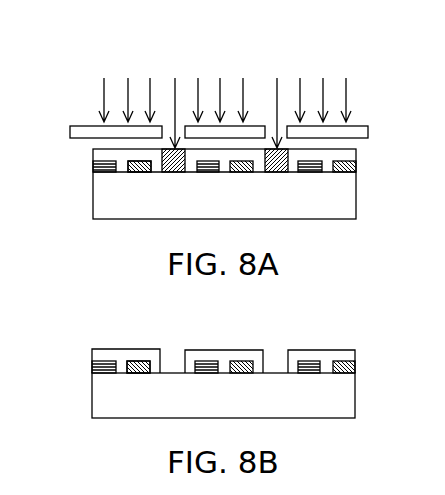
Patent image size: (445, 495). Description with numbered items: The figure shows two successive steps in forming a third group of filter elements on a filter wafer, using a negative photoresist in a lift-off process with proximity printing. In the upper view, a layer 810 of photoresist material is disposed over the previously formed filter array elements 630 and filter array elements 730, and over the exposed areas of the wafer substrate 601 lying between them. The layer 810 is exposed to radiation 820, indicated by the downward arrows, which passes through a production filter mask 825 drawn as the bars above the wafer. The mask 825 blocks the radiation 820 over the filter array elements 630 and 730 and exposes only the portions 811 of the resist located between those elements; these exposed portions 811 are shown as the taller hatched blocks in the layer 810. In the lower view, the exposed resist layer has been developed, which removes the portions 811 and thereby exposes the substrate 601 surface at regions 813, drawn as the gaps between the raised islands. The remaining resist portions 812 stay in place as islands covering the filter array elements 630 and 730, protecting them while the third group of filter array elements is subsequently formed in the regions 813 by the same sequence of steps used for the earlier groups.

In FIG. 8A, the substrate 601 is at (210, 212).
In FIG. 8B, the substrate 601 is at (208, 407).
In FIG. 8A, the filter array elements 630 is at (93, 166).
In FIG. 8B, the filter array elements 630 is at (92, 373).
In FIG. 8A, the filter array elements 730 is at (140, 175).
In FIG. 8B, the filter array elements 730 is at (140, 372).
In FIG. 8A, the layer of photoresist material 810 is at (358, 163).
In FIG. 8A, the portions 811 is at (176, 147).
In FIG. 8A, the resist portions 812 is at (229, 156).
In FIG. 8B, the resist portions 812 is at (127, 349).
In FIG. 8B, the regions 813 is at (173, 360).
In FIG. 8A, the radiation 820 is at (347, 95).
In FIG. 8A, the production filter mask 825 is at (369, 128).